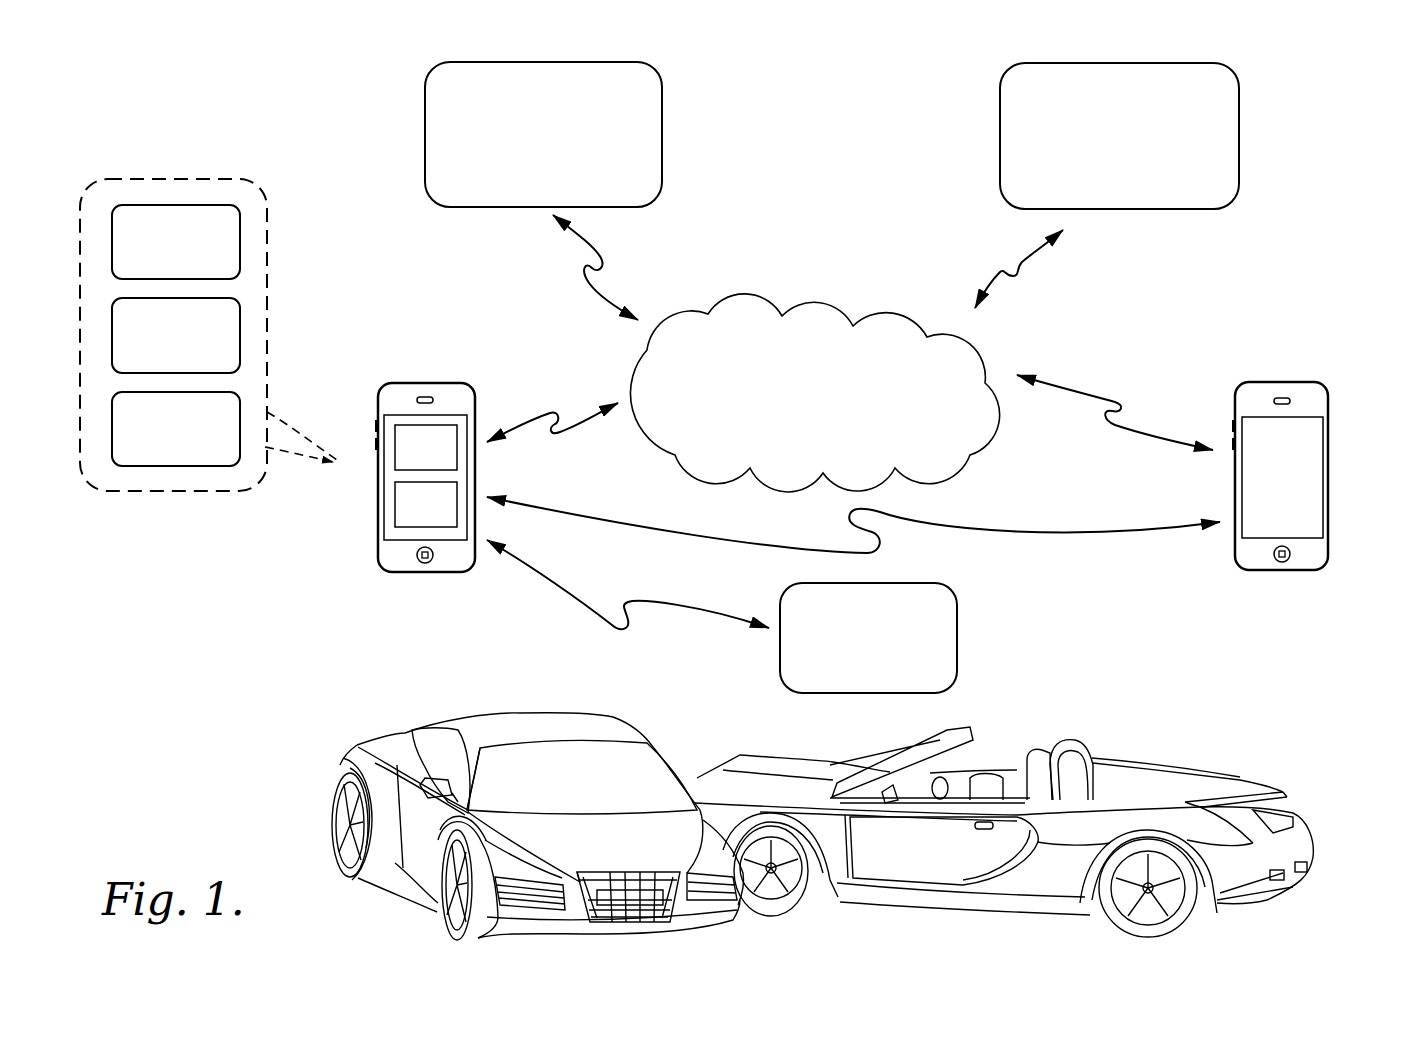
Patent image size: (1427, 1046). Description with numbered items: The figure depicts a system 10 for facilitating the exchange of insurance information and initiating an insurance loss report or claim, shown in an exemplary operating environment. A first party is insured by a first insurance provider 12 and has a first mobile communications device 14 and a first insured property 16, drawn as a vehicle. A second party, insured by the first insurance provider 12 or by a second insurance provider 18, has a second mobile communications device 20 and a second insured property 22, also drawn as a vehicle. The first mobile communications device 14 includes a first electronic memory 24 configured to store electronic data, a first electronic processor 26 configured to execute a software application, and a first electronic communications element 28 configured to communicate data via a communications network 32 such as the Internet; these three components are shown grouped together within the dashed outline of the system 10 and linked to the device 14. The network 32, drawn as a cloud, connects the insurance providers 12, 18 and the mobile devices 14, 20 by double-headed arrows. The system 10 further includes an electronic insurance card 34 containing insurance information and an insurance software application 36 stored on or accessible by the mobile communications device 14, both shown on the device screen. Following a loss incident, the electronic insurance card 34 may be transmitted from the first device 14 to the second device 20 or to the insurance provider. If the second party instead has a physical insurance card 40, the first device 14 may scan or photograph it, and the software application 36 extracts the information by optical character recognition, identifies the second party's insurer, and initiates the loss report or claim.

The system 10 is at (133, 160).
The first insurance provider 12 is at (573, 132).
The first mobile communications device 14 is at (380, 473).
The first insured property 16 is at (487, 727).
The second insurance provider 18 is at (1079, 133).
The second mobile communications device 20 is at (1330, 430).
The second insured property 22 is at (1077, 742).
The first electronic memory 24 is at (129, 240).
The first electronic processor 26 is at (129, 334).
The first electronic communications element 28 is at (129, 428).
The communications network 32 is at (760, 400).
The electronic insurance card 34 is at (415, 440).
The insurance software application 36 is at (408, 520).
The physical insurance card 40 is at (817, 636).